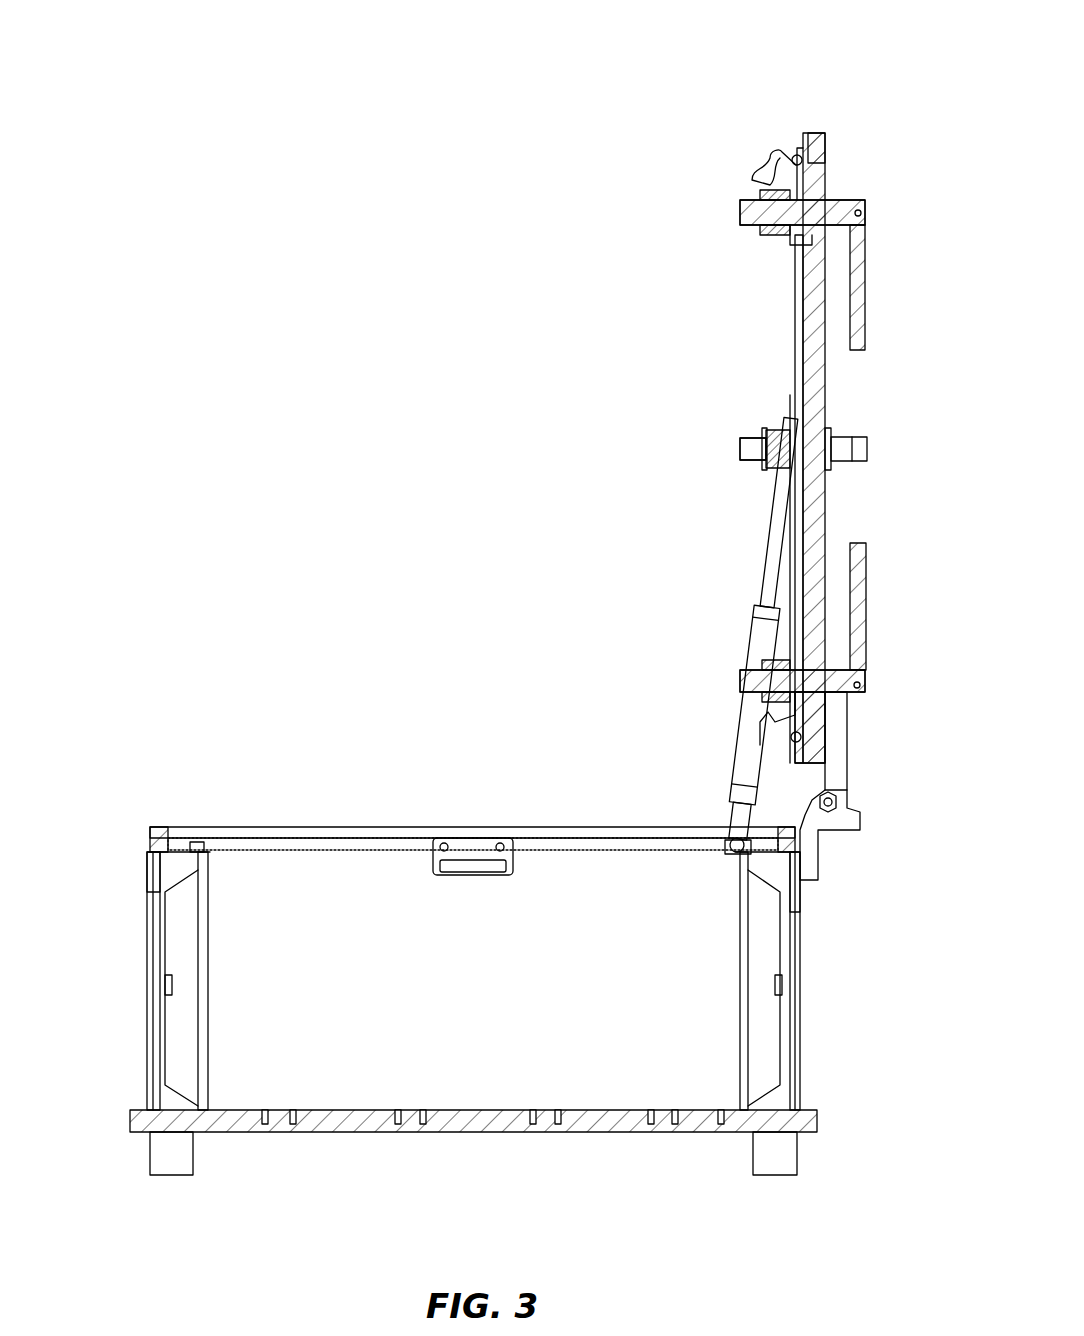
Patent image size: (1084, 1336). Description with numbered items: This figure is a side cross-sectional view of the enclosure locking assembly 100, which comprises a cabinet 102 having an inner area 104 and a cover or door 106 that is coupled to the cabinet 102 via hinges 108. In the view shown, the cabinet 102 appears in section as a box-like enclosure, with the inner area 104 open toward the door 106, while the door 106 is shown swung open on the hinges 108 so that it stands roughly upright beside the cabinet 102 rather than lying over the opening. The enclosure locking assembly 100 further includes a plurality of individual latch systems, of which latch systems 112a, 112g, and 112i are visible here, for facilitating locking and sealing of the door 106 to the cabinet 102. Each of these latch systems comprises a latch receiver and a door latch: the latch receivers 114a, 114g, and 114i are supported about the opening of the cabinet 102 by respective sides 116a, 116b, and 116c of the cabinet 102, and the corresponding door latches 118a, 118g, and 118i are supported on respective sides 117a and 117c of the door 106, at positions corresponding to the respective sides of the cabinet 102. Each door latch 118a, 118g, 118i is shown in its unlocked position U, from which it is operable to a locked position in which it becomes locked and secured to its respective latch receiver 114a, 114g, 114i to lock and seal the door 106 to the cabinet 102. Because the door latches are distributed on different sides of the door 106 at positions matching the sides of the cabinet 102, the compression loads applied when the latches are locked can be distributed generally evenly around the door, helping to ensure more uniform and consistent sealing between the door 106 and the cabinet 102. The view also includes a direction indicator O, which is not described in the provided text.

The enclosure locking assembly 100 is at (447, 180).
The opening direction O is at (488, 457).
The unlocked position U is at (892, 72).
The cabinet 102 is at (150, 1050).
The inner area 104 is at (398, 880).
The door 106 is at (828, 376).
The hinges 108 is at (840, 826).
The latch system 112a is at (862, 215).
The latch system 112g is at (858, 666).
The latch system 112i is at (866, 452).
The latch receiver 114a is at (200, 866).
The latch receiver 114g is at (738, 868).
The latch receiver 114i is at (476, 842).
The side of the cabinet 116a is at (140, 851).
The side of the cabinet 116b is at (586, 822).
The side of the cabinet 116c is at (810, 898).
The side of the door 117a is at (835, 148).
The side of the door 117c is at (848, 703).
The door latch 118a is at (846, 211).
The door latch 118g is at (845, 670).
The door latch 118i is at (845, 462).